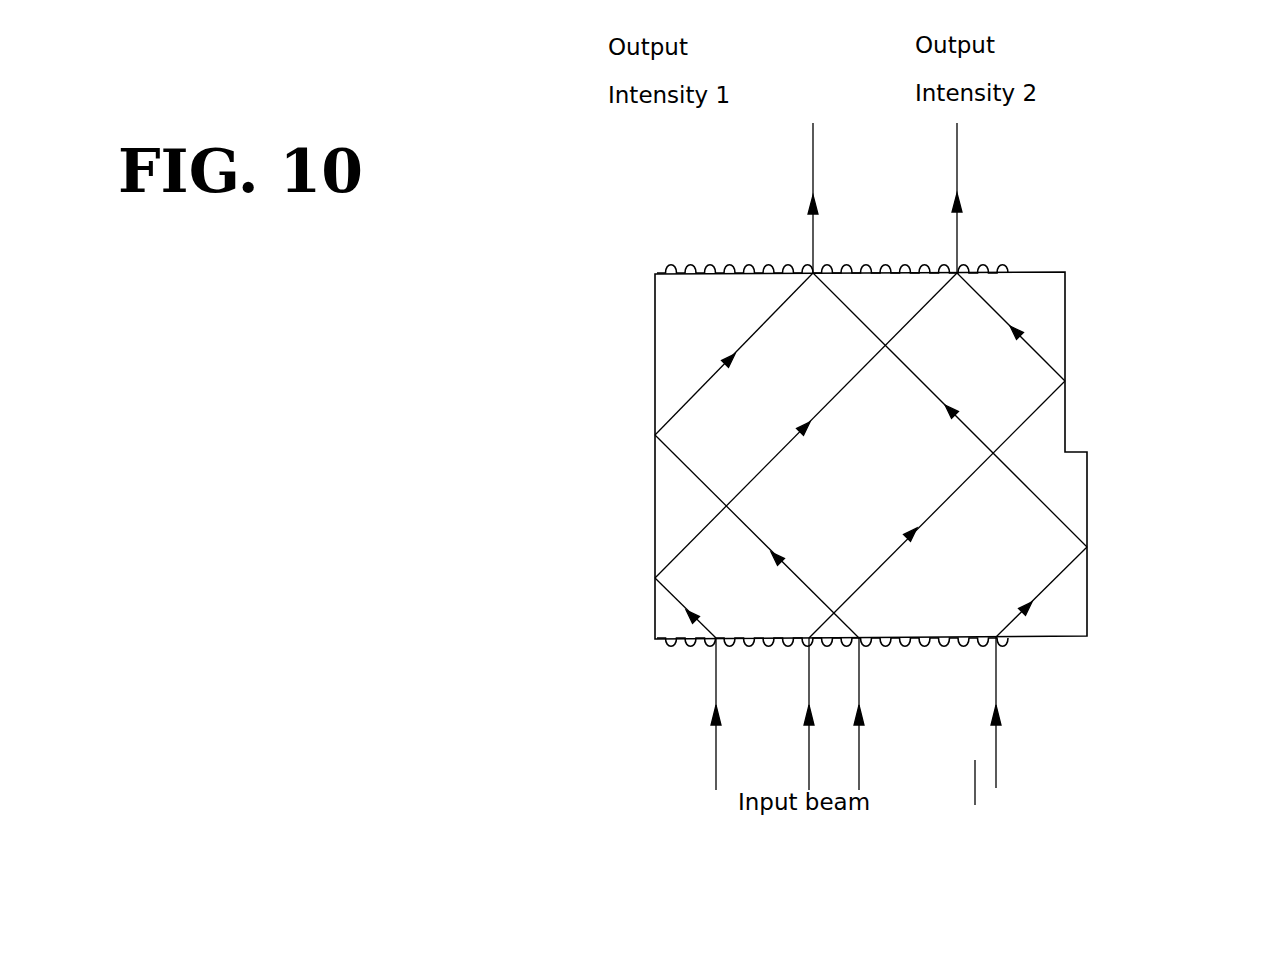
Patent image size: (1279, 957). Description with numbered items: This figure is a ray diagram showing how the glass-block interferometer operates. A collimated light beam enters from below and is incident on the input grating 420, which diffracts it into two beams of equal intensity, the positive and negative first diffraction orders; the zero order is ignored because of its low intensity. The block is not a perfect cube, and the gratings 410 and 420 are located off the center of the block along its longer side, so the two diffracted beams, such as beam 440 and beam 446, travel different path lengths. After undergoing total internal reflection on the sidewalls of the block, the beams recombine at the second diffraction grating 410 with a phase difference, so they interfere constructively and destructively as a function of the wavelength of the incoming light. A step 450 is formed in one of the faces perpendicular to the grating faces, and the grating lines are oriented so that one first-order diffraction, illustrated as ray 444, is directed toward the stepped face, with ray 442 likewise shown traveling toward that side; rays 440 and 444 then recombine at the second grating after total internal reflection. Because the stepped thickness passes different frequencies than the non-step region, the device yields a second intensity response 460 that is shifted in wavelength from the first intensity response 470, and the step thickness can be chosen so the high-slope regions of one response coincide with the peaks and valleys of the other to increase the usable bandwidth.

The grating 410 is at (660, 268).
The input grating 420 is at (1025, 658).
The diffracted beam 440 is at (677, 612).
The second input beam 442 is at (1048, 594).
The ray 444 is at (958, 485).
The diffracted beam 446 is at (758, 537).
The step 450 is at (1078, 353).
The second intensity response 460 is at (957, 173).
The first intensity response 470 is at (805, 218).